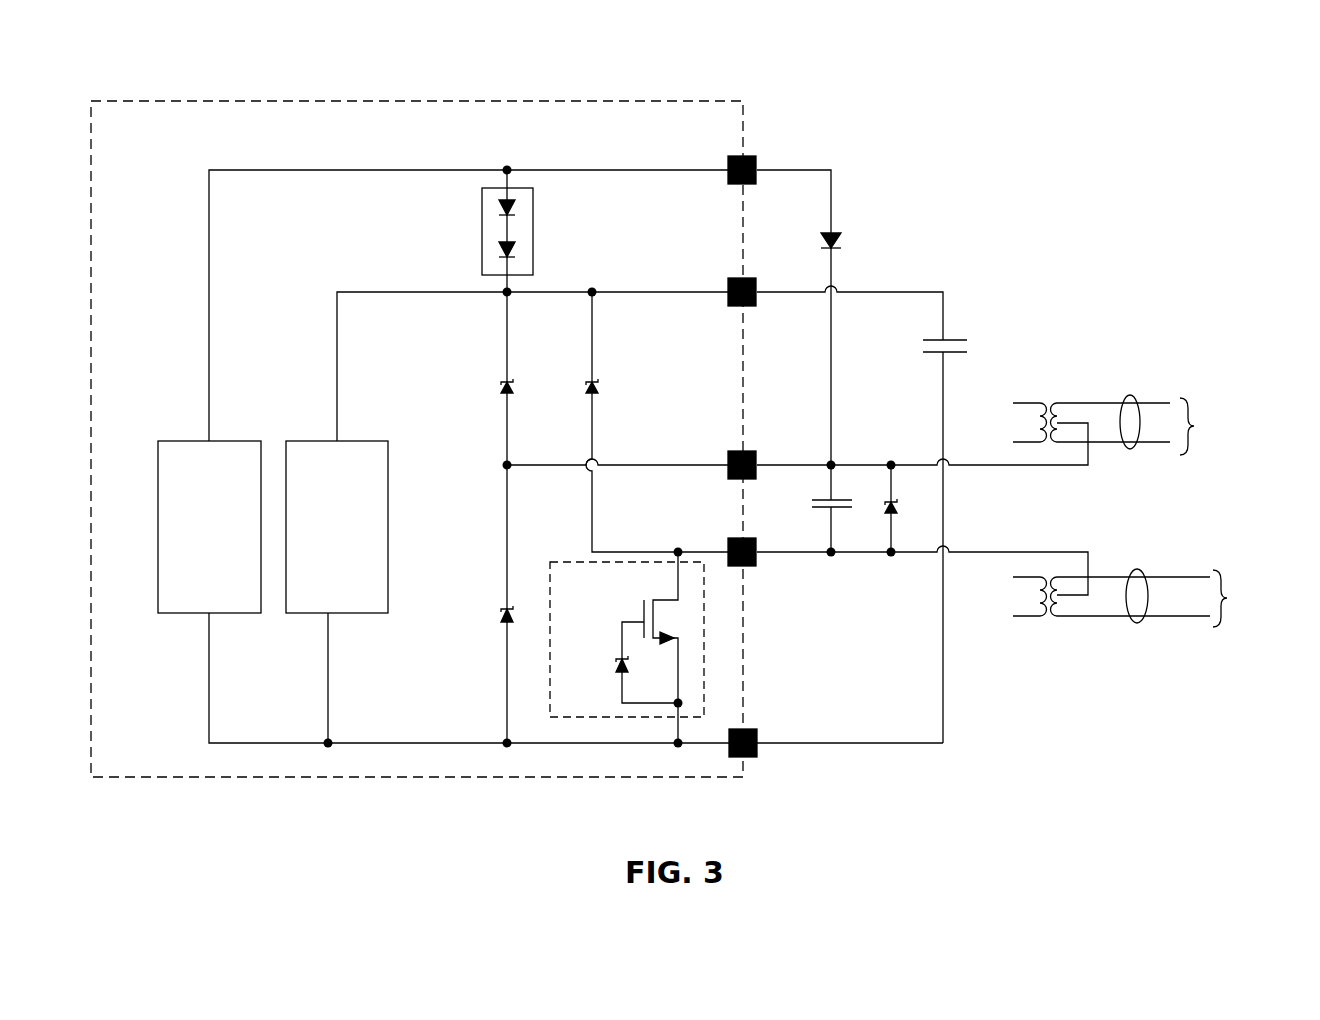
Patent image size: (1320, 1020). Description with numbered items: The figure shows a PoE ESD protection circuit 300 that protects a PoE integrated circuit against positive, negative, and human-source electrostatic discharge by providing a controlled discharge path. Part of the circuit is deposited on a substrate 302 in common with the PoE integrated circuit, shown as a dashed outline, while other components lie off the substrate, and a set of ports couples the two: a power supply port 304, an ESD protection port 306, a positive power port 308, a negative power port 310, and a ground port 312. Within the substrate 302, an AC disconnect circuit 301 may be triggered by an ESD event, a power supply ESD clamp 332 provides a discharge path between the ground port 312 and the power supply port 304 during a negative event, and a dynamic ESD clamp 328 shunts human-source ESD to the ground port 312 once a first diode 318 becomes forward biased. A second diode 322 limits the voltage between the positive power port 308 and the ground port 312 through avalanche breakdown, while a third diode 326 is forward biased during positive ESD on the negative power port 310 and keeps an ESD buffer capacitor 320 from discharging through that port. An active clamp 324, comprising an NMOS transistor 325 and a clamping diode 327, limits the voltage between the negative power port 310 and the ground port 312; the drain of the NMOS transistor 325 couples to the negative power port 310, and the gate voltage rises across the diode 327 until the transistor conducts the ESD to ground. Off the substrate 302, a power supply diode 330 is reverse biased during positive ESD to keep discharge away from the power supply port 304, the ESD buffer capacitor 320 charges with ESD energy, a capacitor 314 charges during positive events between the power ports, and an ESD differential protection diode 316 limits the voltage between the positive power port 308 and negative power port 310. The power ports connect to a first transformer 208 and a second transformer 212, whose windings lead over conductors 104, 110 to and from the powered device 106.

The PoE ESD protection circuit 300 is at (1222, 84).
The AC disconnect circuit 301 is at (482, 230).
The substrate 302 is at (590, 101).
The power supply port 304 is at (728, 176).
The ESD protection port 306 is at (728, 298).
The positive power port 308 is at (728, 462).
The negative power port 310 is at (757, 560).
The ground port 312 is at (758, 750).
The capacitor 314 is at (815, 509).
The ESD differential protection diode 316 is at (887, 513).
The first diode 318 is at (500, 388).
The ESD buffer capacitor 320 is at (960, 336).
The second diode 322 is at (500, 624).
The active clamp 324 is at (624, 610).
The NMOS transistor 325 is at (644, 603).
The third diode 326 is at (588, 388).
The diode 327 is at (617, 665).
The dynamic ESD clamp 328 is at (303, 614).
The power supply diode 330 is at (836, 233).
The power supply ESD clamp 332 is at (185, 614).
The first transformer 208 is at (1048, 404).
The second transformer 212 is at (1050, 618).
The conductor 104 is at (1137, 398).
The conductor 110 is at (1145, 574).
The powered device 106 is at (1243, 512).